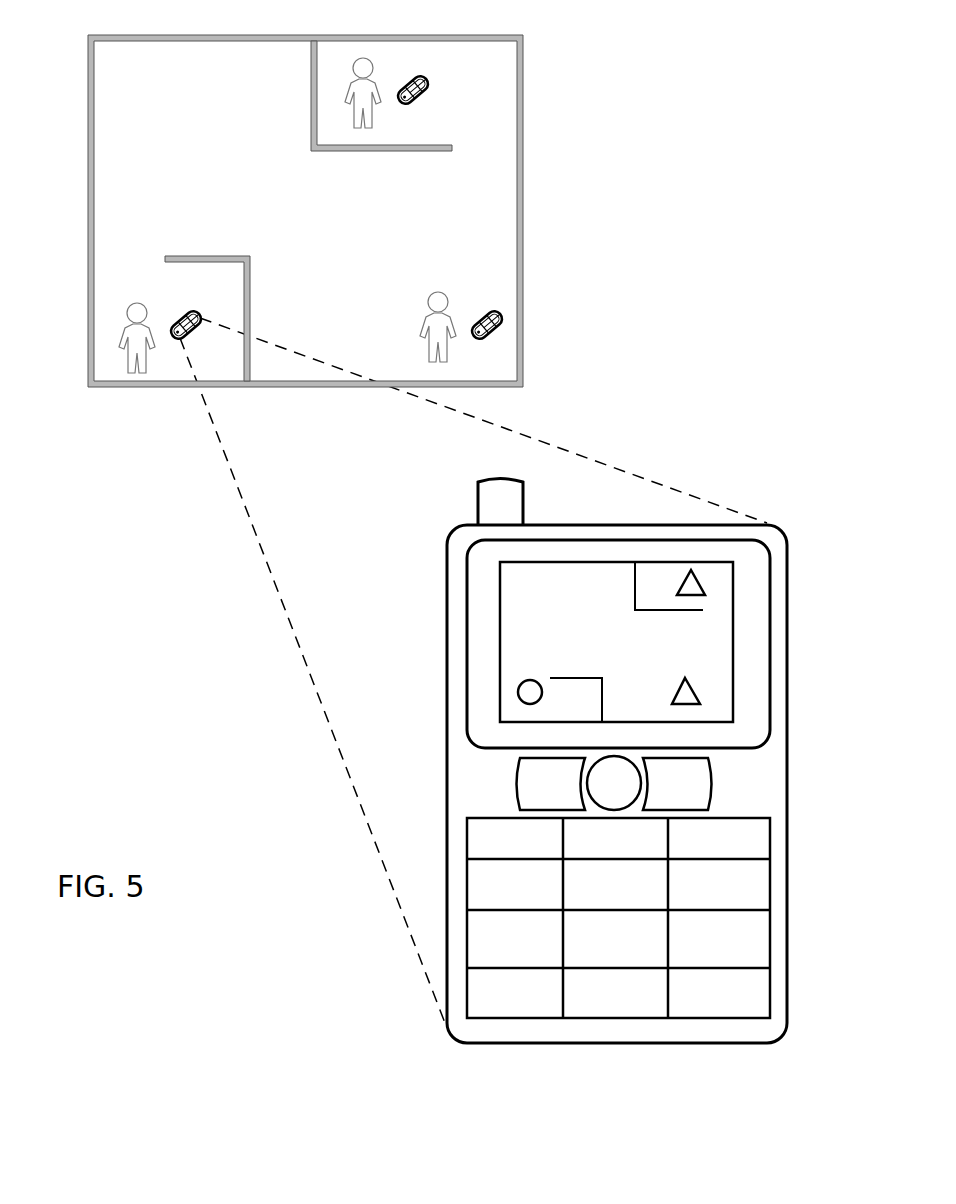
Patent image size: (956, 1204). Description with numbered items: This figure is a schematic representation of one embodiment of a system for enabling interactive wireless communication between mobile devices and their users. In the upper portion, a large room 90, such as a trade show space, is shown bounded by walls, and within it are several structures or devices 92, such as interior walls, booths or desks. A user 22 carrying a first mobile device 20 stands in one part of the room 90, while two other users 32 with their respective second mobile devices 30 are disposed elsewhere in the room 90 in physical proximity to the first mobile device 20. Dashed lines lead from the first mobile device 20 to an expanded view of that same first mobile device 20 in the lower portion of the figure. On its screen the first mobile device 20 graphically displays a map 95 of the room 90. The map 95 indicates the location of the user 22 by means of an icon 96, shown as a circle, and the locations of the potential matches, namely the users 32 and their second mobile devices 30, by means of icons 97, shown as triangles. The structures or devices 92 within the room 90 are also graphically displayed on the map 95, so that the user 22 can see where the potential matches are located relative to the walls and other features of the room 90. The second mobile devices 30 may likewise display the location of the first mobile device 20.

The first mobile device 20 is at (200, 323).
The user 22 is at (117, 316).
The second mobile device 30 is at (430, 78).
The user 32 is at (356, 59).
The room 90 is at (305, 211).
The structures or devices 92 is at (301, 78).
The map 95 is at (491, 588).
The icon 96 is at (517, 700).
The icon 97 is at (708, 582).